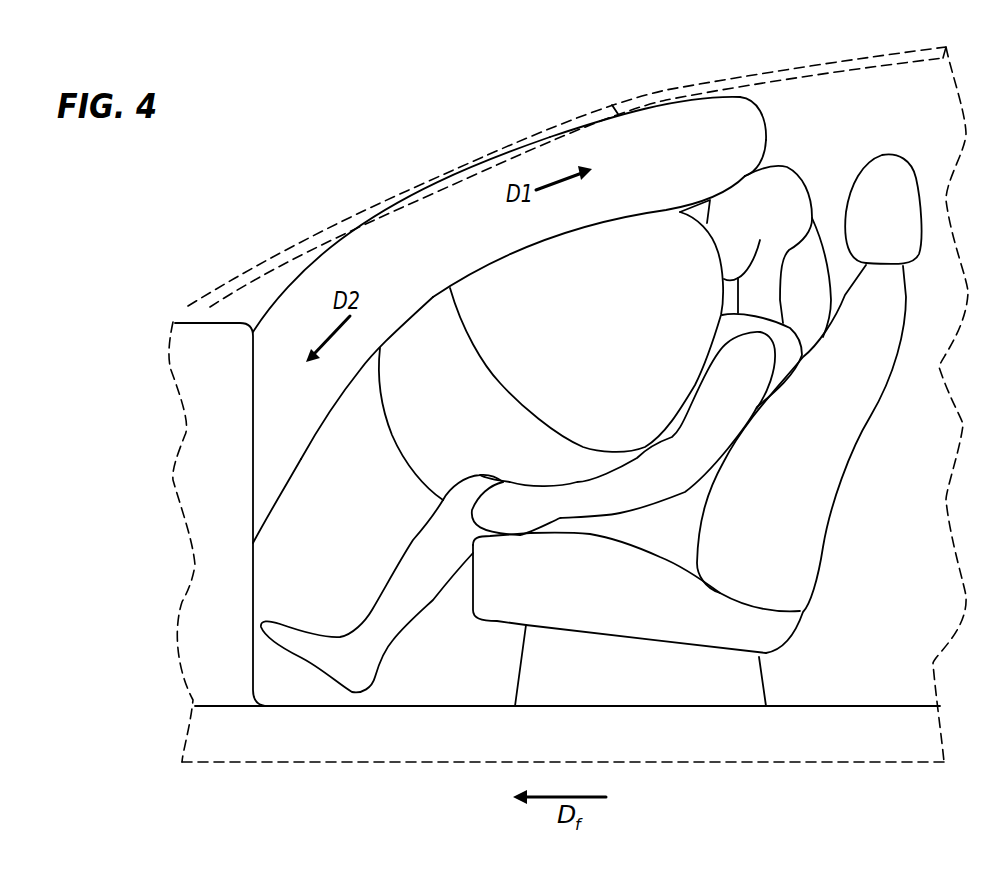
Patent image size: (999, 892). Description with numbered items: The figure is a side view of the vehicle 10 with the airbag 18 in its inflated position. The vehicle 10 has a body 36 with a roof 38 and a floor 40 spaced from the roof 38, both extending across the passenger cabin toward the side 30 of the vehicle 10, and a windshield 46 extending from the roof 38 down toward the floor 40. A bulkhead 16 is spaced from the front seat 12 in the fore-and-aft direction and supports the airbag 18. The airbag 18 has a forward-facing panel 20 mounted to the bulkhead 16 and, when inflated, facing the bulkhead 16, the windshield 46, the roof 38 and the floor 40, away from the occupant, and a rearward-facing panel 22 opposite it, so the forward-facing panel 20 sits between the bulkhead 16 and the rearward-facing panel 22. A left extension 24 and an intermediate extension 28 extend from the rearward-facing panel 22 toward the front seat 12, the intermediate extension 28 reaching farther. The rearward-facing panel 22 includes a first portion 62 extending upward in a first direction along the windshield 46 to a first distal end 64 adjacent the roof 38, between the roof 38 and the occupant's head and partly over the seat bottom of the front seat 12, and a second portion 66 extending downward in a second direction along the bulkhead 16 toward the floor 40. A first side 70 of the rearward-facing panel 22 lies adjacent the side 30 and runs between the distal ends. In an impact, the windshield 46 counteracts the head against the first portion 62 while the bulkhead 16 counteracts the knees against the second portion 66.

The vehicle 10 is at (385, 108).
The front seat 12 is at (859, 442).
The bulkhead 16 is at (252, 460).
The airbag 18 is at (644, 103).
The forward-facing panel 20 is at (277, 297).
The rearward-facing panel 22 is at (290, 481).
The left extension 24 is at (505, 388).
The intermediate extension 28 is at (395, 443).
The side 30 is at (728, 770).
The body 36 is at (160, 343).
The roof 38 is at (776, 63).
The floor 40 is at (818, 764).
The windshield 46 is at (346, 226).
The first portion 62 is at (770, 121).
The first distal end 64 is at (765, 143).
The second portion 66 is at (280, 526).
The first side 70 is at (699, 166).